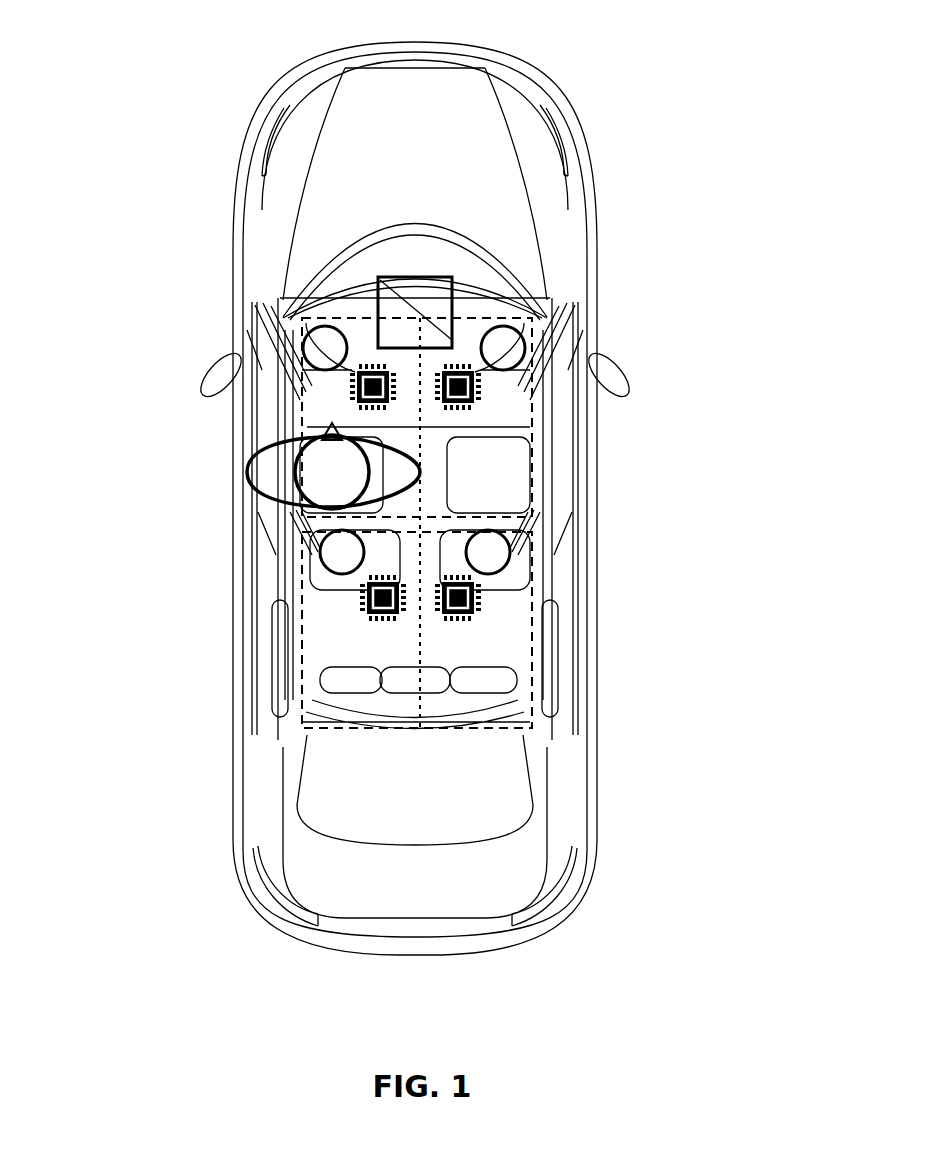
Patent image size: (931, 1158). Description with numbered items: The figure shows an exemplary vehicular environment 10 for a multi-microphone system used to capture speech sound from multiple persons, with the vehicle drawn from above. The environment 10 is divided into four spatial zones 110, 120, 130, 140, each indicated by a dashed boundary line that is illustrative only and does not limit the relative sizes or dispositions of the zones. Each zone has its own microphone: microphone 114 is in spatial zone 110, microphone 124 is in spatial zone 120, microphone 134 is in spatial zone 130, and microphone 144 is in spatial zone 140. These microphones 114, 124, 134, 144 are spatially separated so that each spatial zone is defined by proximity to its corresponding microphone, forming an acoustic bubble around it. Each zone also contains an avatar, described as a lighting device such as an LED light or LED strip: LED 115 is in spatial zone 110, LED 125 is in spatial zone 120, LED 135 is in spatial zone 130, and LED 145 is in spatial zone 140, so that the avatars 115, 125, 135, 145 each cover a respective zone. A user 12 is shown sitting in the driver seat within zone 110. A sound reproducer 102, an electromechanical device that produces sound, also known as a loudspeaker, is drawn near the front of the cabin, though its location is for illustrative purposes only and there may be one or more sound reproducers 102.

The environment 10 is at (317, 265).
The user 12 is at (312, 462).
The sound reproducer 102 is at (452, 297).
The spatial zone 110 is at (327, 402).
The microphone 114 is at (323, 340).
The avatar 115 is at (368, 357).
The spatial zone 120 is at (488, 470).
The microphone 124 is at (518, 352).
The avatar 125 is at (488, 385).
The spatial zone 130 is at (357, 633).
The microphone 134 is at (352, 550).
The avatar 135 is at (353, 595).
The spatial zone 140 is at (498, 647).
The microphone 144 is at (513, 557).
The avatar 145 is at (487, 597).